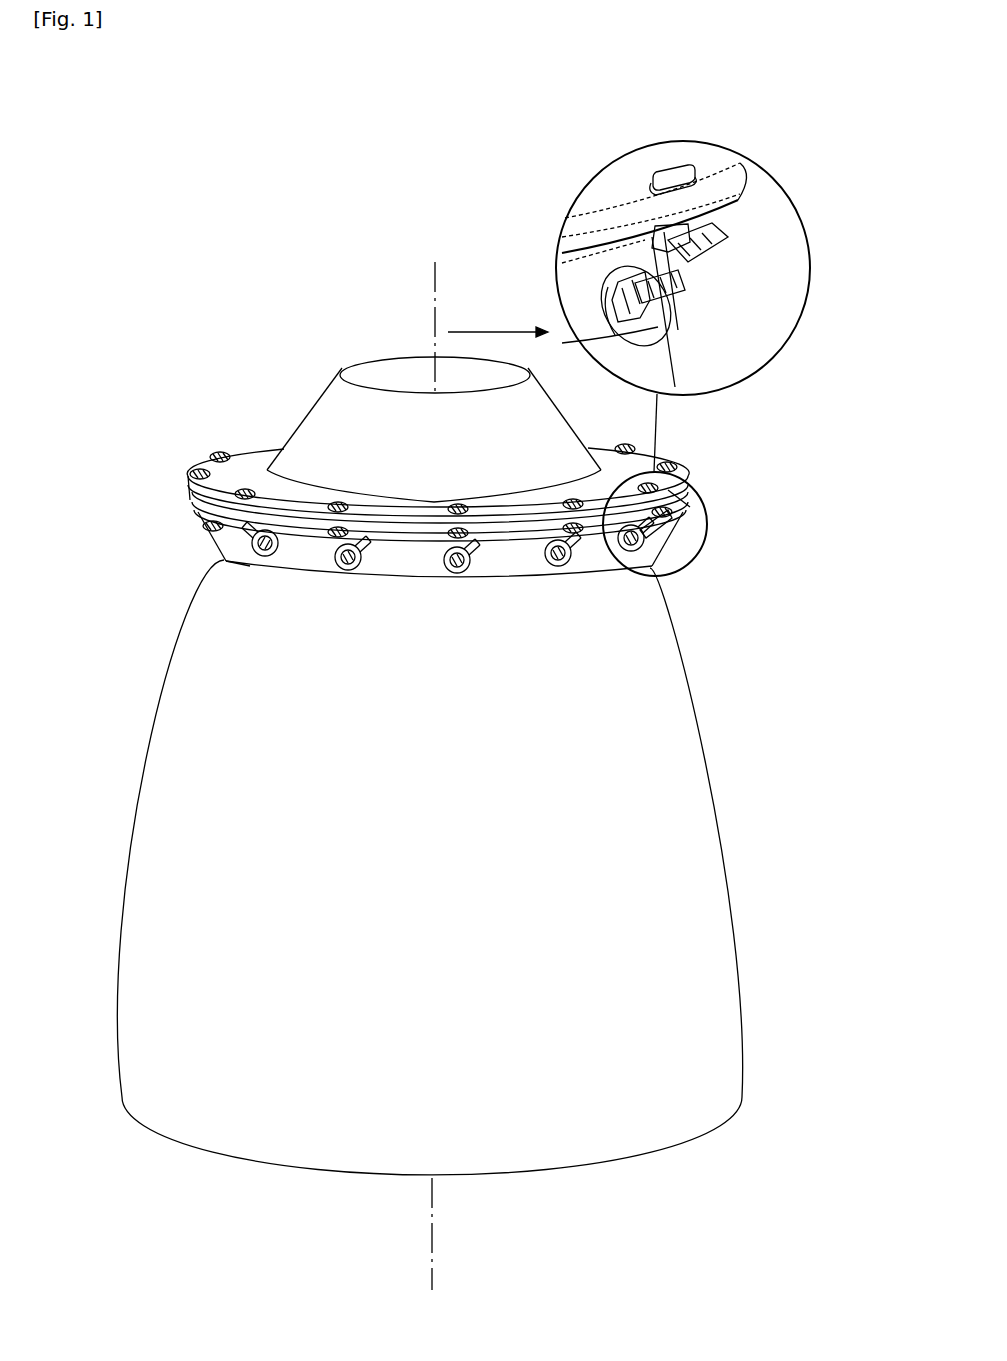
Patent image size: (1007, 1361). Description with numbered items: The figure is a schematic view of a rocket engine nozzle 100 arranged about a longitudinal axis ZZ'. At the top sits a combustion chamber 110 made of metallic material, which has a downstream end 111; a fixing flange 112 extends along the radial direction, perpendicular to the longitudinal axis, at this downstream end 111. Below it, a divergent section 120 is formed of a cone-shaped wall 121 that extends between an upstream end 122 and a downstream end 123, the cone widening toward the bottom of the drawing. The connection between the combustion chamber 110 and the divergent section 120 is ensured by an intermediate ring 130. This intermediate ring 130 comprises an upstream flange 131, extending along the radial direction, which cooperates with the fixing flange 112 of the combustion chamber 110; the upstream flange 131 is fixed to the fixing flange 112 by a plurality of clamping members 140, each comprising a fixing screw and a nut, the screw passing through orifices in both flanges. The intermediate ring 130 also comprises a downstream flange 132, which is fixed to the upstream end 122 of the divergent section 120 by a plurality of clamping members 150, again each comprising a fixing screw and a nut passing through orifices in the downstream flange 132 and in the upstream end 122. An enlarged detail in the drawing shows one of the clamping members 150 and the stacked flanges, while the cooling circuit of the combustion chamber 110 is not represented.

The rocket engine nozzle 100 is at (430, 703).
The combustion chamber 110 is at (434, 429).
The downstream end of the combustion chamber 111 is at (663, 462).
The fixing flange 112 is at (471, 327).
The divergent section 120 is at (417, 867).
The cone-shaped wall 121 is at (448, 828).
The upstream end of the divergent section 122 is at (202, 573).
The downstream end of the divergent section 123 is at (396, 1131).
The intermediate ring 130 is at (449, 354).
The upstream flange 131 is at (684, 368).
The downstream flange 132 is at (440, 552).
The clamping members 140 is at (673, 143).
The clamping members 150 is at (503, 420).